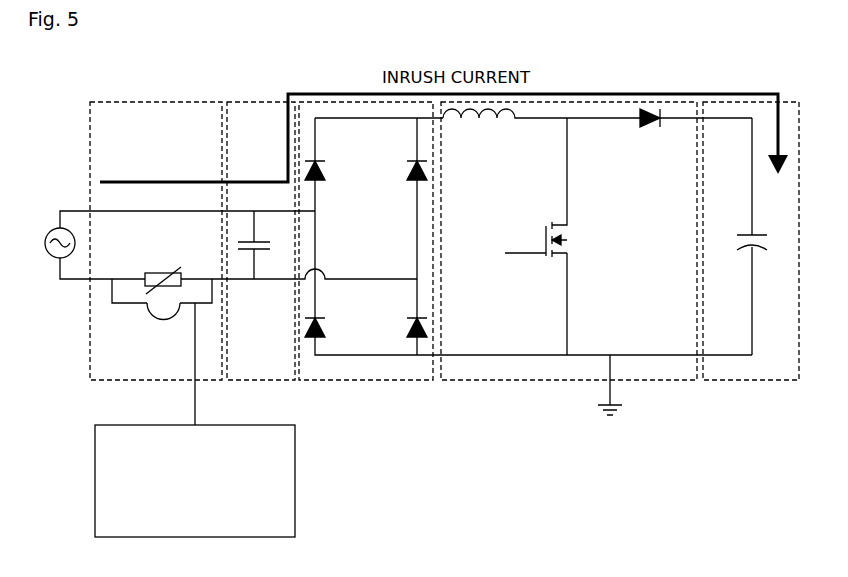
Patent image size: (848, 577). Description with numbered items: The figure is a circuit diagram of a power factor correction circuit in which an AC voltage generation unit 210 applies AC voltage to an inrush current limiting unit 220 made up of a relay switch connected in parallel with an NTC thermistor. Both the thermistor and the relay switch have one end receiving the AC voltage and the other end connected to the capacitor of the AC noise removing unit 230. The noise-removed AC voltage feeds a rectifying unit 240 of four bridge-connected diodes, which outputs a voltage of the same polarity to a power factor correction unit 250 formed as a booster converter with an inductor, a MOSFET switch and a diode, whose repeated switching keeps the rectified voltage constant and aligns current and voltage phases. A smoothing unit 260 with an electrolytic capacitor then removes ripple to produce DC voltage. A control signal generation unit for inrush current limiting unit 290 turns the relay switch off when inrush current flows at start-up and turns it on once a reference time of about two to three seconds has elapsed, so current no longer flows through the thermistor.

The AC voltage generation unit 210 is at (46, 229).
The inrush current limiting unit 220 is at (146, 101).
The AC noise removing unit 230 is at (249, 101).
The rectifying unit 240 is at (368, 101).
The power factor correction unit 250 is at (569, 101).
The smoothing unit 260 is at (751, 101).
The control signal generation unit for inrush current limiting unit 290 is at (295, 480).